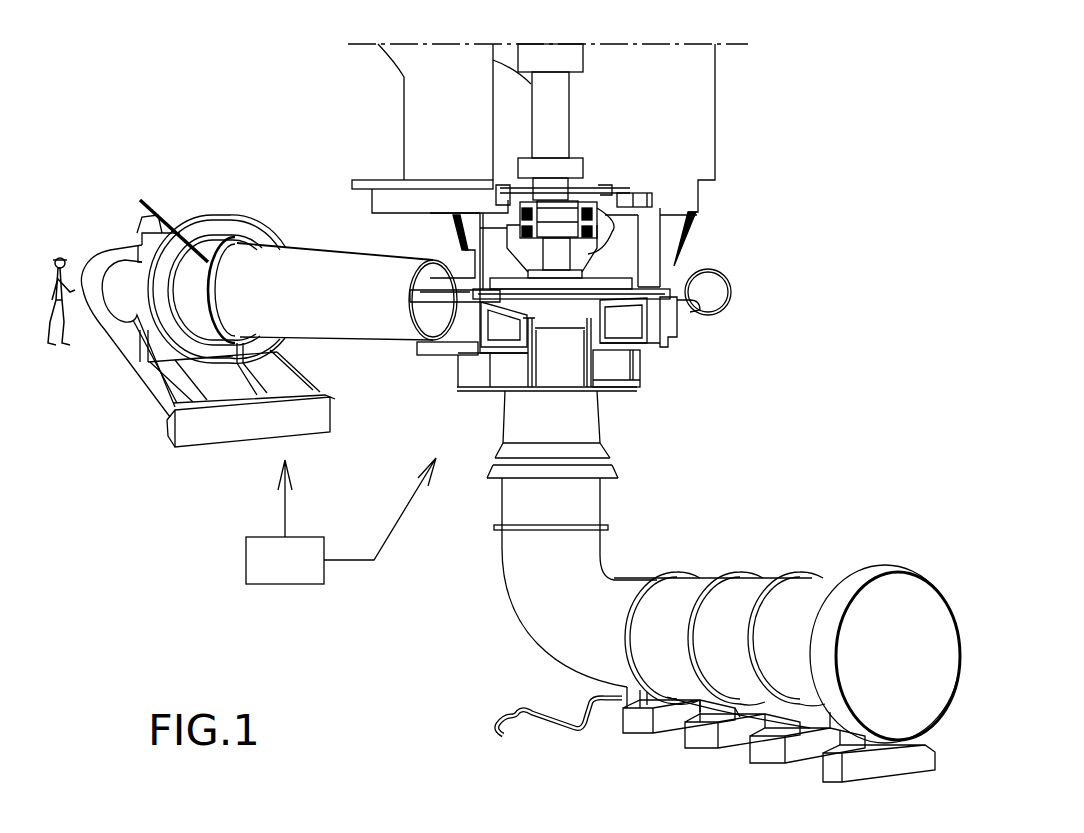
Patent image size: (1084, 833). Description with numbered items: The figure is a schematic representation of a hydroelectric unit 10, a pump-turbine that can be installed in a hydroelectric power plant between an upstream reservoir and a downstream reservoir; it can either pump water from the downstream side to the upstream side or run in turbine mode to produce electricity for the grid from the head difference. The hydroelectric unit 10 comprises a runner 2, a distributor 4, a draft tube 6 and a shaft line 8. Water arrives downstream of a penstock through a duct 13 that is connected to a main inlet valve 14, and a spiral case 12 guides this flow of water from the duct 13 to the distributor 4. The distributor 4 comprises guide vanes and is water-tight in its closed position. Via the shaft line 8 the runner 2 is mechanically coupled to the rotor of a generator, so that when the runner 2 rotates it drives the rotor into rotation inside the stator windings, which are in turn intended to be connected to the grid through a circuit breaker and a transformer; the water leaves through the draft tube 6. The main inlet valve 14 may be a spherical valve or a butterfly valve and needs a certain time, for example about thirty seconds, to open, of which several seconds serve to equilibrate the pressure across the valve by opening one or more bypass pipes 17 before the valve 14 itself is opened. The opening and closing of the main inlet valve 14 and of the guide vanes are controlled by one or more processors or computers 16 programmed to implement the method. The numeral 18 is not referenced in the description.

The runner 2 is at (572, 307).
The distributor 4 is at (672, 267).
The draft tube 6 is at (563, 495).
The shaft line 8 is at (541, 112).
The hydroelectric unit 10 is at (800, 80).
The spiral case 12 is at (735, 280).
The duct 13 is at (353, 308).
The main inlet valve 14 is at (185, 318).
The processor or computer 16 is at (341, 521).
The bypass pipe 17 is at (152, 206).
The bearing 18 is at (567, 230).